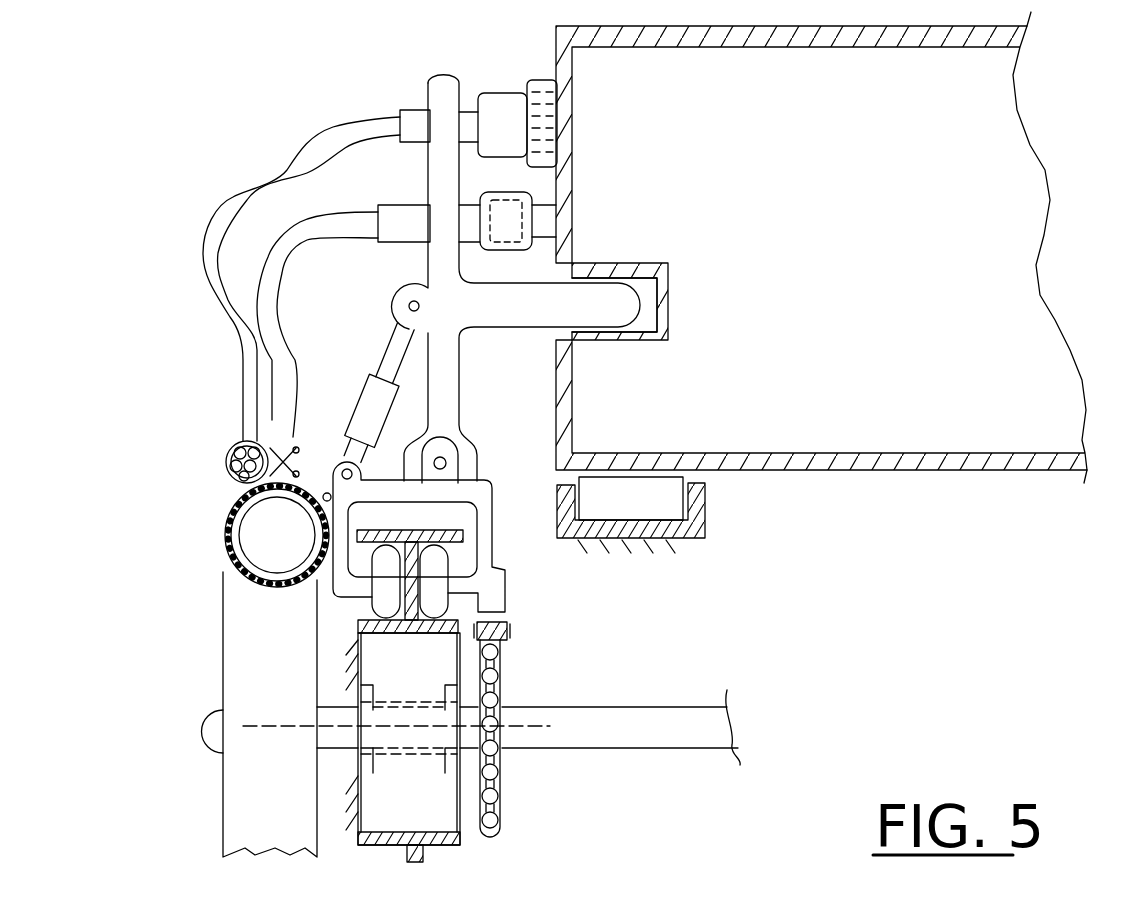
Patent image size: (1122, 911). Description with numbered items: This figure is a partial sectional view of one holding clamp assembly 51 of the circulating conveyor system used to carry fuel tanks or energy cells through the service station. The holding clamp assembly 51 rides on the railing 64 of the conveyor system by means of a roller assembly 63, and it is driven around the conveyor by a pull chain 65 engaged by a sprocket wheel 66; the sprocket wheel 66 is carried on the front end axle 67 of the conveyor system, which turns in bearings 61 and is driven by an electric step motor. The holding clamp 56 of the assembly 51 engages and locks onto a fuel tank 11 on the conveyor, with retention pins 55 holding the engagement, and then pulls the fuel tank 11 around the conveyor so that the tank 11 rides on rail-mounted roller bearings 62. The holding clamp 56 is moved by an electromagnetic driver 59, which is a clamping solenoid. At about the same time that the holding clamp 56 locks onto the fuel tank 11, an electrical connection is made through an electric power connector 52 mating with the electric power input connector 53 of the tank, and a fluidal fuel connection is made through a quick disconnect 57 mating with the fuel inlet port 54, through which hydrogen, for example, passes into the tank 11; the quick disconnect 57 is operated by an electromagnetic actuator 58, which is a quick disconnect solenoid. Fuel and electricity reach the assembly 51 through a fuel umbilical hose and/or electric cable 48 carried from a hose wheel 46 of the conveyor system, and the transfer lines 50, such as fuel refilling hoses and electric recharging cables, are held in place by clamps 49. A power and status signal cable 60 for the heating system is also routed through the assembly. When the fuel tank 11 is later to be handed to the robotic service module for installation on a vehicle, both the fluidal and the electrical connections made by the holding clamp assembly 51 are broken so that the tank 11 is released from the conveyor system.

The fuel tank 11 is at (836, 253).
The hose wheel 46 is at (257, 684).
The fuel umbilical hose and/or electric cable 48 is at (282, 243).
The clamp 49 is at (230, 523).
The transfer line 50 is at (263, 528).
The holding clamp assembly 51 is at (141, 141).
The electric power connector 52 is at (495, 88).
The electric power input connector 53 is at (548, 92).
The fuel inlet port 54 is at (558, 217).
The retention pin 55 is at (575, 310).
The holding clamp 56 is at (470, 330).
The quick disconnect 57 is at (503, 188).
The electromagnetic actuator 58 is at (397, 220).
The electromagnetic driver 59 is at (360, 413).
The power and status signal cable 60 is at (222, 458).
The bearing 61 is at (357, 767).
The roller bearing 62 is at (670, 487).
The roller assembly 63 is at (482, 522).
The railing 64 is at (708, 517).
The pull chain 65 is at (512, 630).
The sprocket wheel 66 is at (503, 768).
The front end axle of conveyor system 67 is at (710, 730).